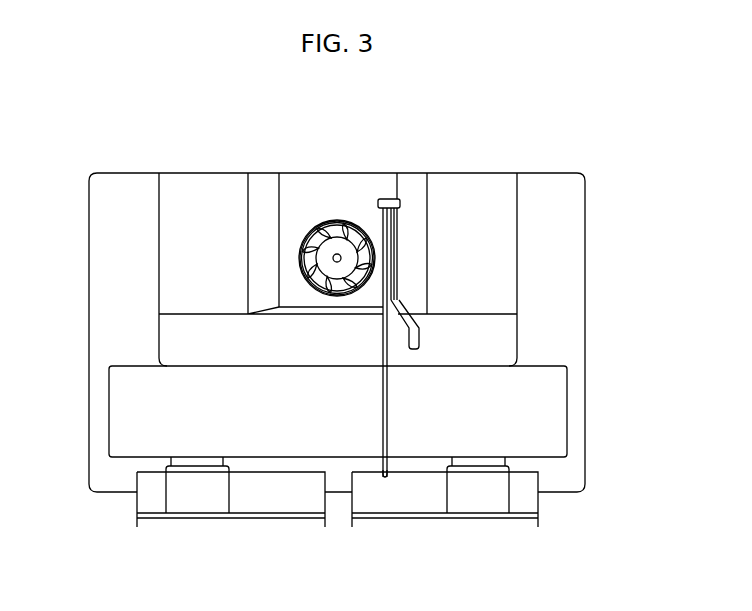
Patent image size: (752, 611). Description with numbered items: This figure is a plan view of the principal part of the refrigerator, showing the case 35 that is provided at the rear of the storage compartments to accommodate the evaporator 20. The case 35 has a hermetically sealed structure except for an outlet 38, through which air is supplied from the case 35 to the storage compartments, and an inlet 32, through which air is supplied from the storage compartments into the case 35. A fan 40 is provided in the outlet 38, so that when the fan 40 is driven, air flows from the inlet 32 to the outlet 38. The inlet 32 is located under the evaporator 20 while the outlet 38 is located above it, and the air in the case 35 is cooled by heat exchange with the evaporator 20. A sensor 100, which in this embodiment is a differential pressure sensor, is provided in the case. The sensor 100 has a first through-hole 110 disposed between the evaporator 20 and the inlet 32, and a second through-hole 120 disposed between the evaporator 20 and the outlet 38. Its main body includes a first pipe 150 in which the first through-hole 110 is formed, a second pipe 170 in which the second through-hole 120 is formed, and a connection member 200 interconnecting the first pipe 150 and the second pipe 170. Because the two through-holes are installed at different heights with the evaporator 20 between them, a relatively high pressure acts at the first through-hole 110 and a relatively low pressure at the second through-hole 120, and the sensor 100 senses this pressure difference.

The case 35 is at (122, 172).
The outlet 38 is at (315, 221).
The fan 40 is at (359, 223).
The sensor 100 is at (663, 450).
The connection member 200 is at (401, 203).
The second pipe 170 is at (399, 258).
The second through-hole 120 is at (420, 350).
The first pipe 150 is at (392, 400).
The first through-hole 110 is at (398, 484).
The evaporator 20 is at (146, 411).
The inlet 32 is at (197, 490).